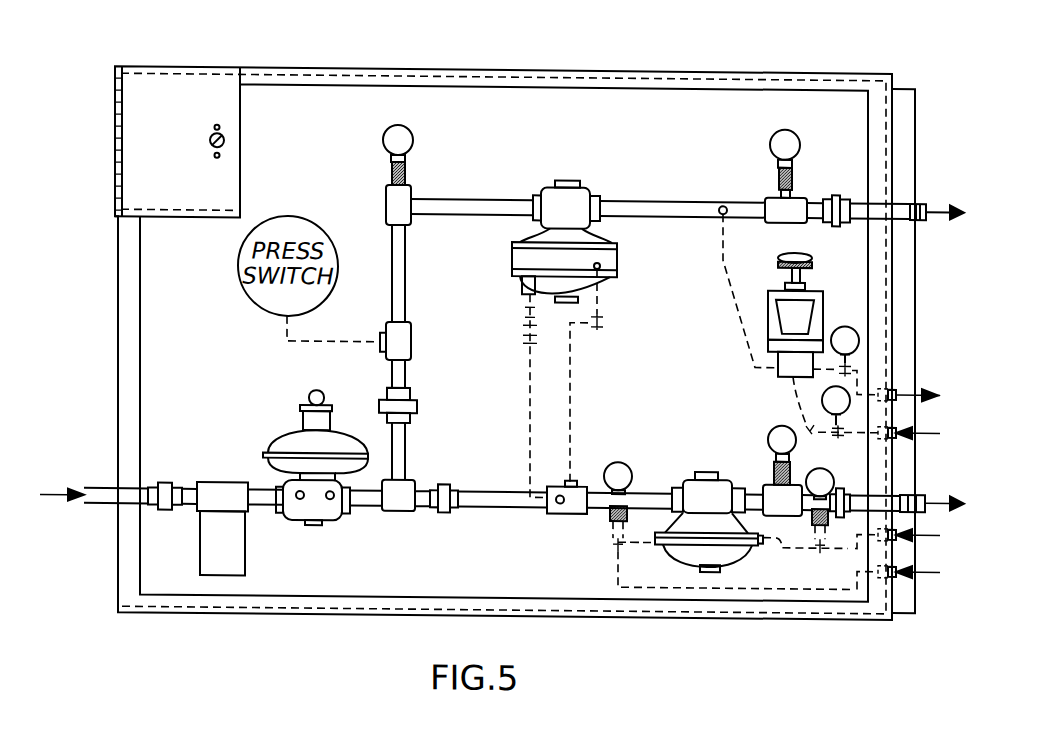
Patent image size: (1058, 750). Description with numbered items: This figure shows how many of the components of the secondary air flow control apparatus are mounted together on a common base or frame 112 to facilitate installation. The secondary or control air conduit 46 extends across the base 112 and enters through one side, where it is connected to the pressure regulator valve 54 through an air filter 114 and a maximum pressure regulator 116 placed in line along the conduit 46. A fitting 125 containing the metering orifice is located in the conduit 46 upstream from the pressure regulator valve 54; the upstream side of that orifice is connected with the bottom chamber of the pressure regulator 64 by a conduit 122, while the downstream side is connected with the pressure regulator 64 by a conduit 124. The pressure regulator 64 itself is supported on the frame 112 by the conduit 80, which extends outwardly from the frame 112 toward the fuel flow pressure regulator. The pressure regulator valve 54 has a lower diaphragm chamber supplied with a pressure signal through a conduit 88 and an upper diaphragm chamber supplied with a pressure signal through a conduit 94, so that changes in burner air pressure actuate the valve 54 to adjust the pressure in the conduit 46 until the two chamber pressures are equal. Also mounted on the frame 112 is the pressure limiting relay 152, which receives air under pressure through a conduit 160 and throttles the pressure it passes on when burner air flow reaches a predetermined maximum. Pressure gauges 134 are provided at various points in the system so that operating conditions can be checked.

The common base or frame 112 is at (737, 67).
The pressure gauges 134 is at (412, 135).
The conduit 80 is at (700, 184).
The pressure regulator 64 is at (512, 257).
The pressure limiting relay 152 is at (816, 288).
The conduit 160 is at (792, 386).
The maximum pressure regulator 116 is at (264, 449).
The conduit 122 is at (528, 430).
The conduit 124 is at (572, 400).
The pilot block 125 is at (574, 509).
The secondary or control air conduit 46 is at (103, 497).
The air filter 114 is at (242, 563).
The pressure regulator valve 54 is at (702, 547).
The conduit 88 is at (768, 582).
The conduit 94 is at (782, 544).